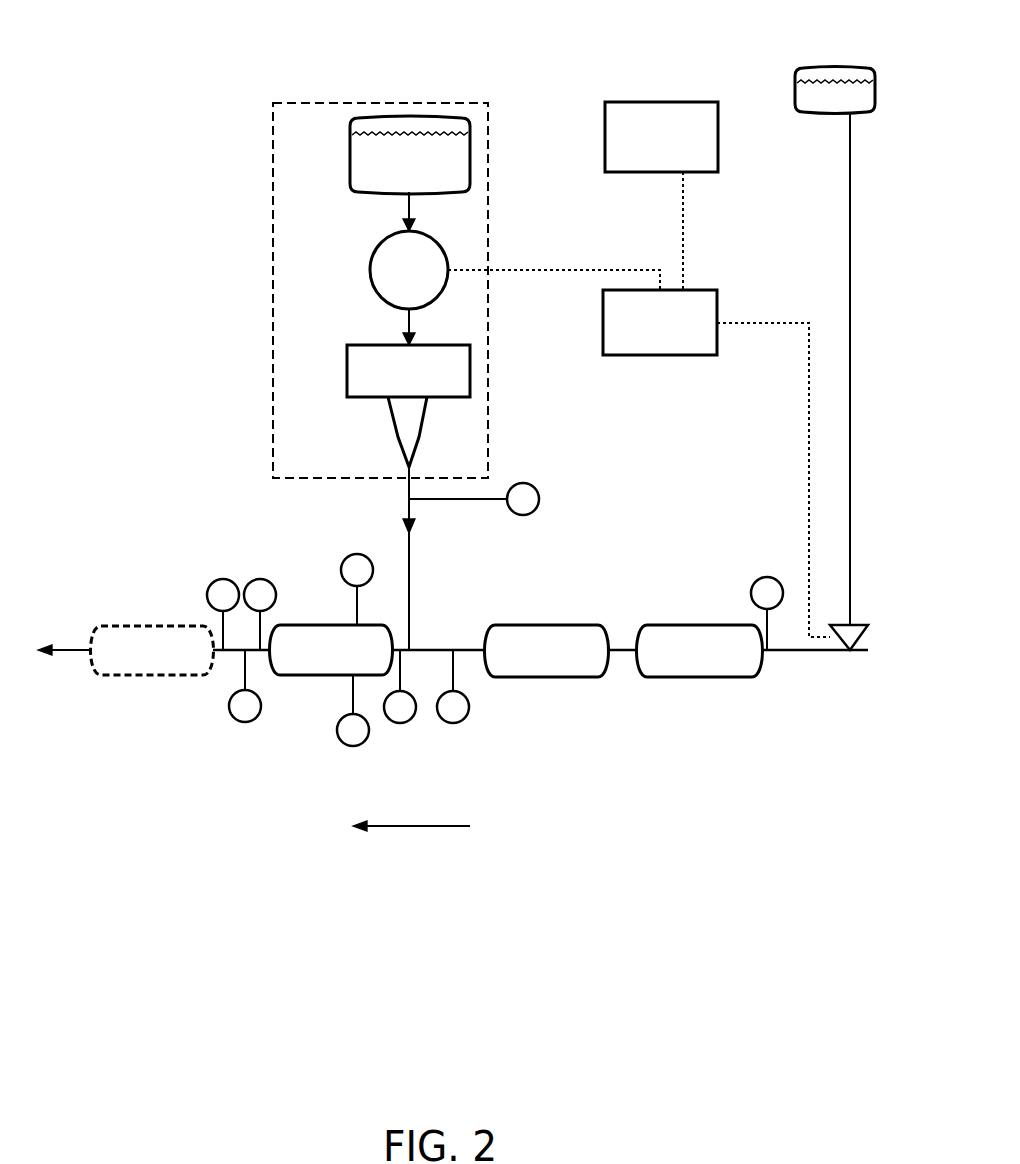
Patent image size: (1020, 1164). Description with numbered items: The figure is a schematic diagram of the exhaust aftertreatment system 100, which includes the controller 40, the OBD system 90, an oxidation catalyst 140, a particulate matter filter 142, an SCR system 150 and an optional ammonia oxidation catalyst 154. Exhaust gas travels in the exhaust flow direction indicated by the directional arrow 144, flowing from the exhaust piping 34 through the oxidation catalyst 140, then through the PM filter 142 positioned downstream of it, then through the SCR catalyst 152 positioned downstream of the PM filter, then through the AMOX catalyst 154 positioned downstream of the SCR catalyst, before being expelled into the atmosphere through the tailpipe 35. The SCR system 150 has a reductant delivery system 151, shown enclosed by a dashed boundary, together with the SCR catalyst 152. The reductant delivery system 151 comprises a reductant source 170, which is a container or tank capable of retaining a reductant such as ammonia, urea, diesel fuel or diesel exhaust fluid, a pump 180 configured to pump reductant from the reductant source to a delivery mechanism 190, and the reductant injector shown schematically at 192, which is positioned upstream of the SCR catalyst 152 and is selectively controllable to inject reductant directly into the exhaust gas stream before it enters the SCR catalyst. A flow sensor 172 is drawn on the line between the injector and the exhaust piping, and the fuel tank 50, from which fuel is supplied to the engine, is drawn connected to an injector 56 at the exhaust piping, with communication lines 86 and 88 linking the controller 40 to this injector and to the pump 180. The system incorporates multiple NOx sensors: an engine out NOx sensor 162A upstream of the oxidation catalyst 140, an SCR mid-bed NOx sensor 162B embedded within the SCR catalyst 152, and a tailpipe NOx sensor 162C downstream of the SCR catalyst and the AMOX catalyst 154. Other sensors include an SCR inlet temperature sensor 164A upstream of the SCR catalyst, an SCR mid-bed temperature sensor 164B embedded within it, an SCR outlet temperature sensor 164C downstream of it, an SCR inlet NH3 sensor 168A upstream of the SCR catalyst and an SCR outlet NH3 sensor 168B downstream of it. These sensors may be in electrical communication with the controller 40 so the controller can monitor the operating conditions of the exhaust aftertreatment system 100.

The exhaust piping 34 is at (822, 652).
The tailpipe 35 is at (62, 657).
The controller 40 is at (717, 290).
The fuel tank 50 is at (795, 96).
The hydrocarbon injector 56 is at (858, 625).
The communication line to injector 86 is at (809, 376).
The communication line to pump 88 is at (548, 270).
The OBD system 90 is at (686, 102).
The exhaust aftertreatment system 100 is at (141, 30).
The oxidation catalyst 140 is at (688, 677).
The particulate matter filter 142 is at (570, 677).
The directional arrow 144 is at (422, 826).
The SCR system 150 is at (221, 271).
The reductant delivery system 151 is at (375, 103).
The SCR catalyst 152 is at (312, 677).
The ammonia oxidation catalyst 154 is at (142, 677).
The engine out NOx sensor 162A is at (760, 578).
The SCR mid-bed NOx sensor 162B is at (355, 554).
The tailpipe NOx sensor 162C is at (220, 579).
The SCR inlet temperature sensor 164A is at (462, 720).
The SCR mid-bed temperature sensor 164B is at (352, 746).
The SCR outlet temperature sensor 164C is at (240, 722).
The SCR inlet NH3 sensor 168A is at (400, 723).
The SCR outlet NH3 sensor 168B is at (263, 579).
The reductant source 170 is at (350, 155).
The flow sensor 172 is at (527, 483).
The pump 180 is at (371, 277).
The delivery mechanism 190 is at (347, 372).
The reductant injector 192 is at (398, 437).